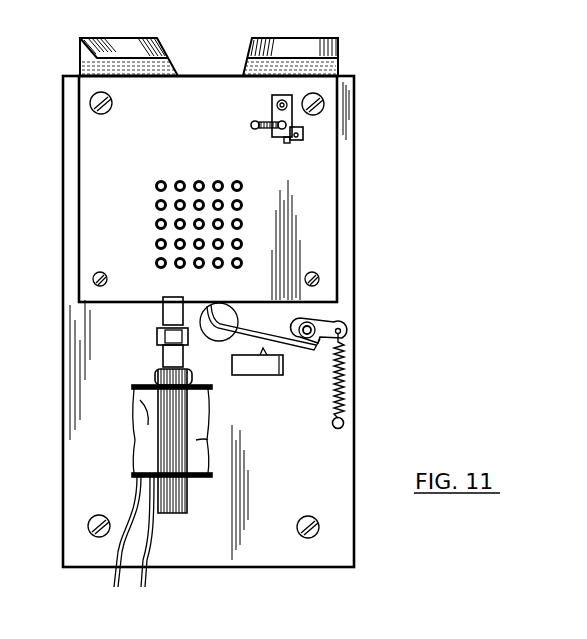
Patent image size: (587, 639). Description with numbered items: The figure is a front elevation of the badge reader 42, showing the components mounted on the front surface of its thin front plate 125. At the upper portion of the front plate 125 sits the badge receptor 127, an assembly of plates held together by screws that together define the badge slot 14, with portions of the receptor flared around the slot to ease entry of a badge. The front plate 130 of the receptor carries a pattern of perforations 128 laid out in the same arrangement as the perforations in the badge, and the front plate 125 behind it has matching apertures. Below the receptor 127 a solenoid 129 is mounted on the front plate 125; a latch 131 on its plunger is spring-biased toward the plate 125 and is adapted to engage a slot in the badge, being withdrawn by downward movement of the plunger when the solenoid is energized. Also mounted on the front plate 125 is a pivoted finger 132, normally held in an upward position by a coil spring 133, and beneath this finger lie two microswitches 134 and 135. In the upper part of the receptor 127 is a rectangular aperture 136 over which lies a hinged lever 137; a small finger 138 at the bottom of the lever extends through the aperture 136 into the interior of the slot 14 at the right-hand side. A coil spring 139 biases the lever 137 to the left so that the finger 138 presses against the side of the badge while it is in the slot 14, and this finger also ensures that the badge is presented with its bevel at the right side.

The badge slot 14 is at (307, 45).
The badge reader 42 is at (347, 135).
The front plate 125 is at (343, 312).
The badge receptor 127 is at (330, 201).
The perforations 128 is at (213, 200).
The solenoid 129 is at (140, 447).
The front plate of the receptor 130 is at (332, 231).
The latch 131 is at (165, 313).
The pivoted finger 132 is at (243, 333).
The coil spring 133 is at (346, 378).
The microswitch 134 is at (253, 368).
The microswitch 135 is at (274, 372).
The rectangular aperture 136 is at (303, 137).
The hinged lever 137 is at (273, 115).
The small finger 138 is at (286, 143).
The coil spring 139 is at (263, 128).